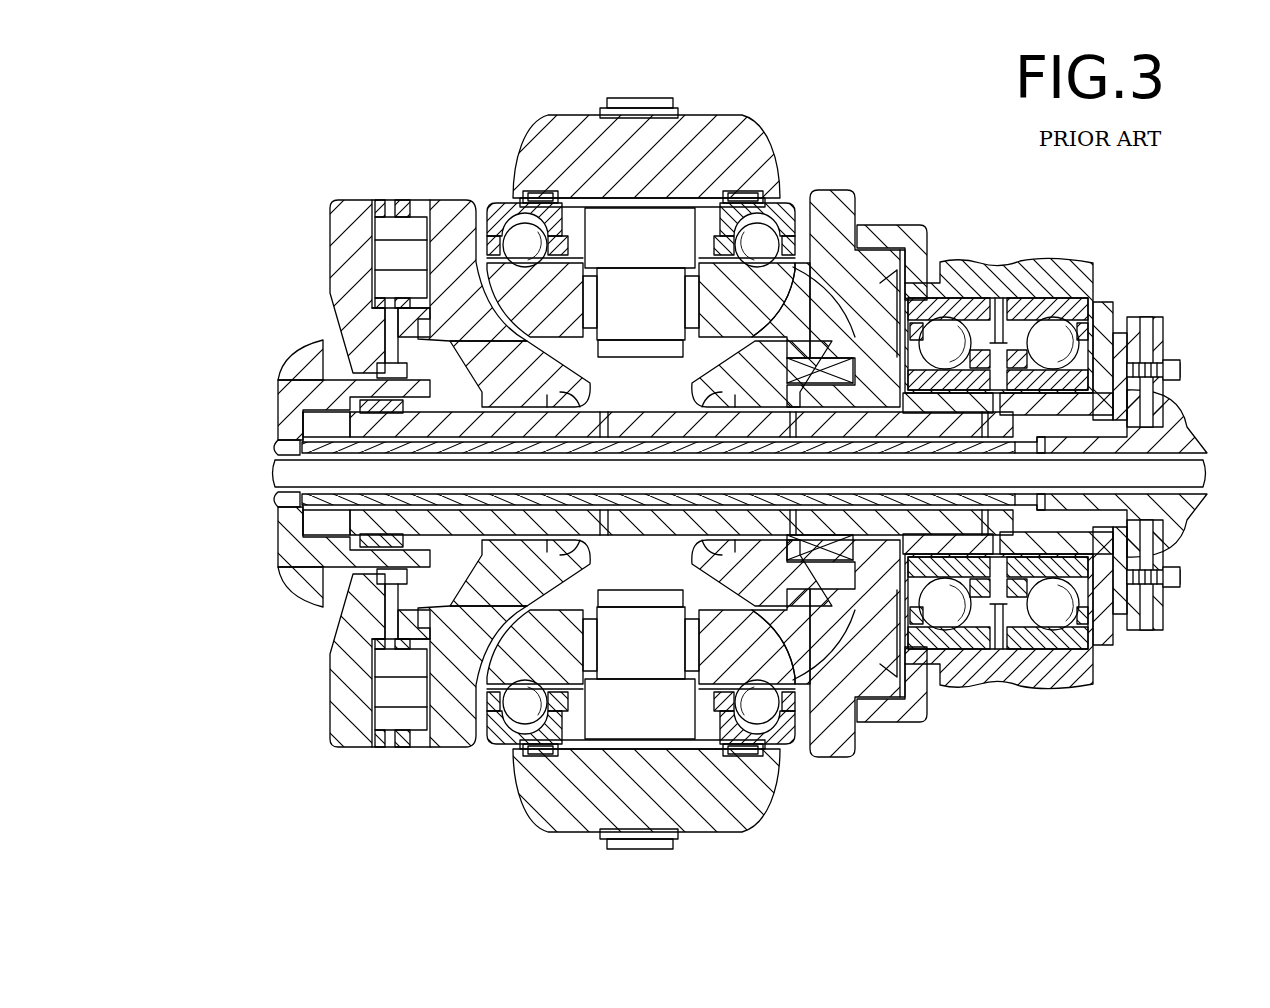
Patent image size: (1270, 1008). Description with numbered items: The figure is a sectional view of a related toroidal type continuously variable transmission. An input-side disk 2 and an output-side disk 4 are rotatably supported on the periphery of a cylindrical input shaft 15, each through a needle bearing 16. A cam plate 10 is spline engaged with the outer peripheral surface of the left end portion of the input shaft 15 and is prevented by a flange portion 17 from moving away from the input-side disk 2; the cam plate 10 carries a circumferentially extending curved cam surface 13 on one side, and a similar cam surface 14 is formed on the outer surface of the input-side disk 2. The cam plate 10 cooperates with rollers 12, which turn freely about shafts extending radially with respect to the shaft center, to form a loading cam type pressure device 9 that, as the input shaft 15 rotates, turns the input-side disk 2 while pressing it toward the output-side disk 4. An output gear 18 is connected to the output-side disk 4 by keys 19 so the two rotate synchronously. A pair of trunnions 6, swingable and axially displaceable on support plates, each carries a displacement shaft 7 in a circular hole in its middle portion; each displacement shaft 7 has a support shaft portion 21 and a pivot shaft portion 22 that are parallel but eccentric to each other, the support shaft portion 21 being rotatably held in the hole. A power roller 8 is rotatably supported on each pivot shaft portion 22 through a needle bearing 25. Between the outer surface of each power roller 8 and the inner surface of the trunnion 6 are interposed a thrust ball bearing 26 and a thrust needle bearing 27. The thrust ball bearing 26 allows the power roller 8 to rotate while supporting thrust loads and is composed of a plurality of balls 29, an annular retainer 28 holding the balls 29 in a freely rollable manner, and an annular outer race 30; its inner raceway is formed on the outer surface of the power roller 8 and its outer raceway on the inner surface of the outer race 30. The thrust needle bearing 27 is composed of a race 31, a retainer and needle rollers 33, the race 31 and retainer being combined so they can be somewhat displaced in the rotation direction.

The input-side disk 2 is at (450, 203).
The output-side disk 4 is at (835, 193).
The trunnion 6 is at (722, 125).
The displacement shaft 7 is at (642, 470).
The power roller 8 is at (560, 335).
The pressure device 9 is at (403, 453).
The cam plate 10 is at (345, 203).
The roller 12 is at (402, 225).
The cam surface 13 is at (378, 203).
The cam surface 14 is at (422, 203).
The input shaft 15 is at (1195, 432).
The needle bearing 16 is at (610, 400).
The flange portion 17 is at (283, 385).
The output gear 18 is at (913, 233).
The key 19 is at (797, 560).
The support shaft portion 21 is at (645, 97).
The pivot shaft portion 22 is at (610, 275).
The needle bearing 25 is at (690, 315).
The thrust ball bearing 26 is at (610, 487).
The thrust needle bearing 27 is at (656, 472).
The retainer 28 is at (792, 270).
The ball 29 is at (505, 248).
The outer race 30 is at (508, 215).
The race 31 is at (537, 193).
The needle roller 33 is at (540, 198).